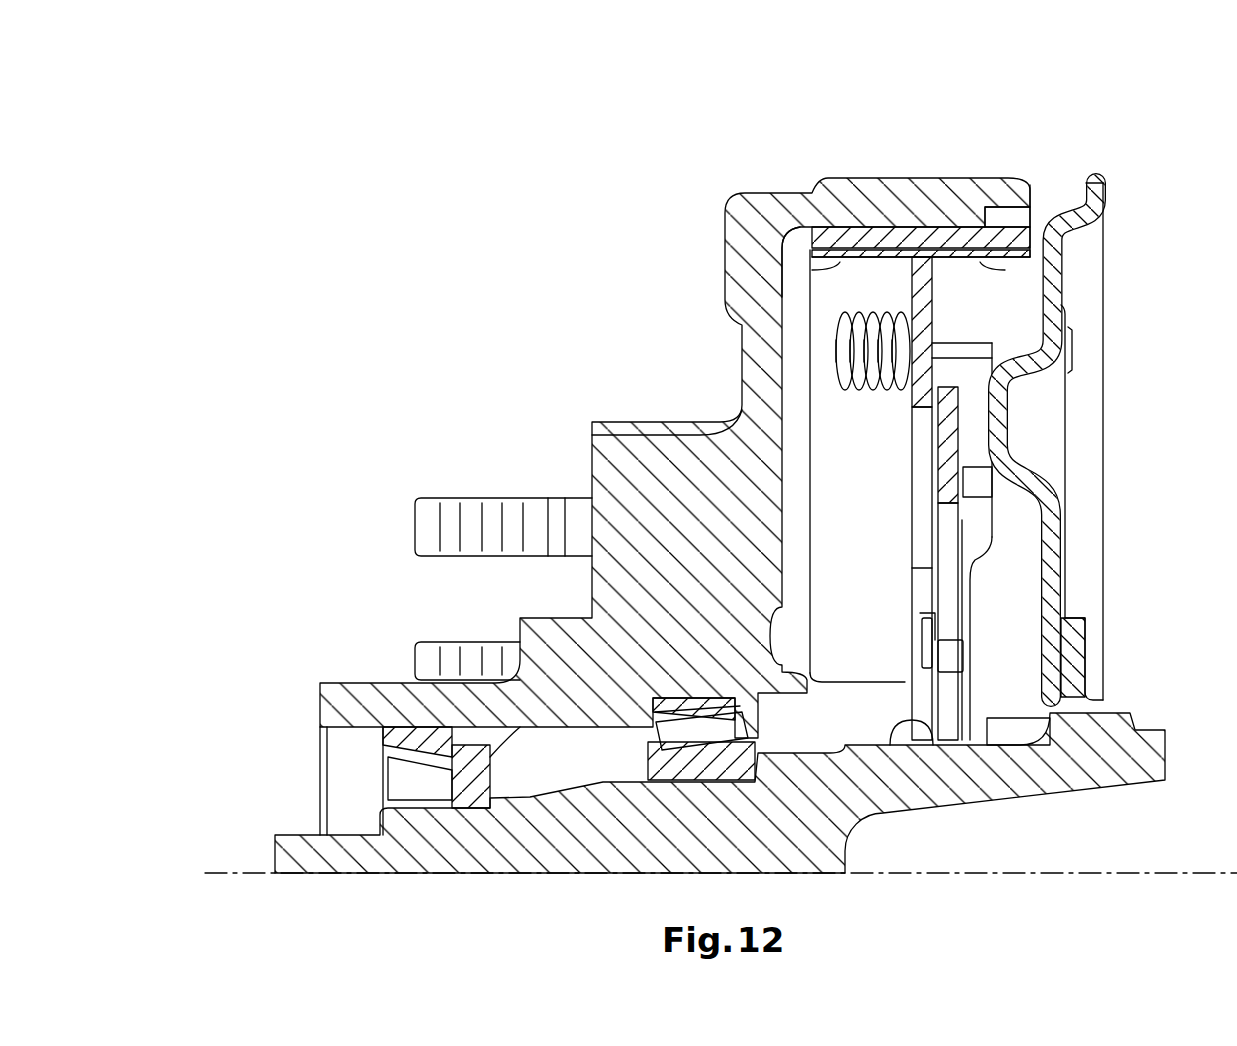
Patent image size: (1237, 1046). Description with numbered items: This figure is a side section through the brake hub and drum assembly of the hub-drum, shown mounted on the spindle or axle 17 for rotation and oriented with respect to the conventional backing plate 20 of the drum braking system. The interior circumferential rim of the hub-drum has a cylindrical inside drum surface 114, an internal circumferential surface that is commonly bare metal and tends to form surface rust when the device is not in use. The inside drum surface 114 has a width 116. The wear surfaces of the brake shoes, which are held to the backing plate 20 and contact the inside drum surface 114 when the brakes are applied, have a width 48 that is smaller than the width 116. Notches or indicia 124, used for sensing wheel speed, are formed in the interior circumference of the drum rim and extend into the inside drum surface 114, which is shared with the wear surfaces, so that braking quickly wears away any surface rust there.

The spindle or axle 17 is at (277, 851).
The backing plate 20 is at (1104, 195).
The width 48 is at (1029, 225).
The inside drum surface 114 is at (778, 252).
The width 116 is at (1035, 225).
The indicia 124 is at (1013, 217).